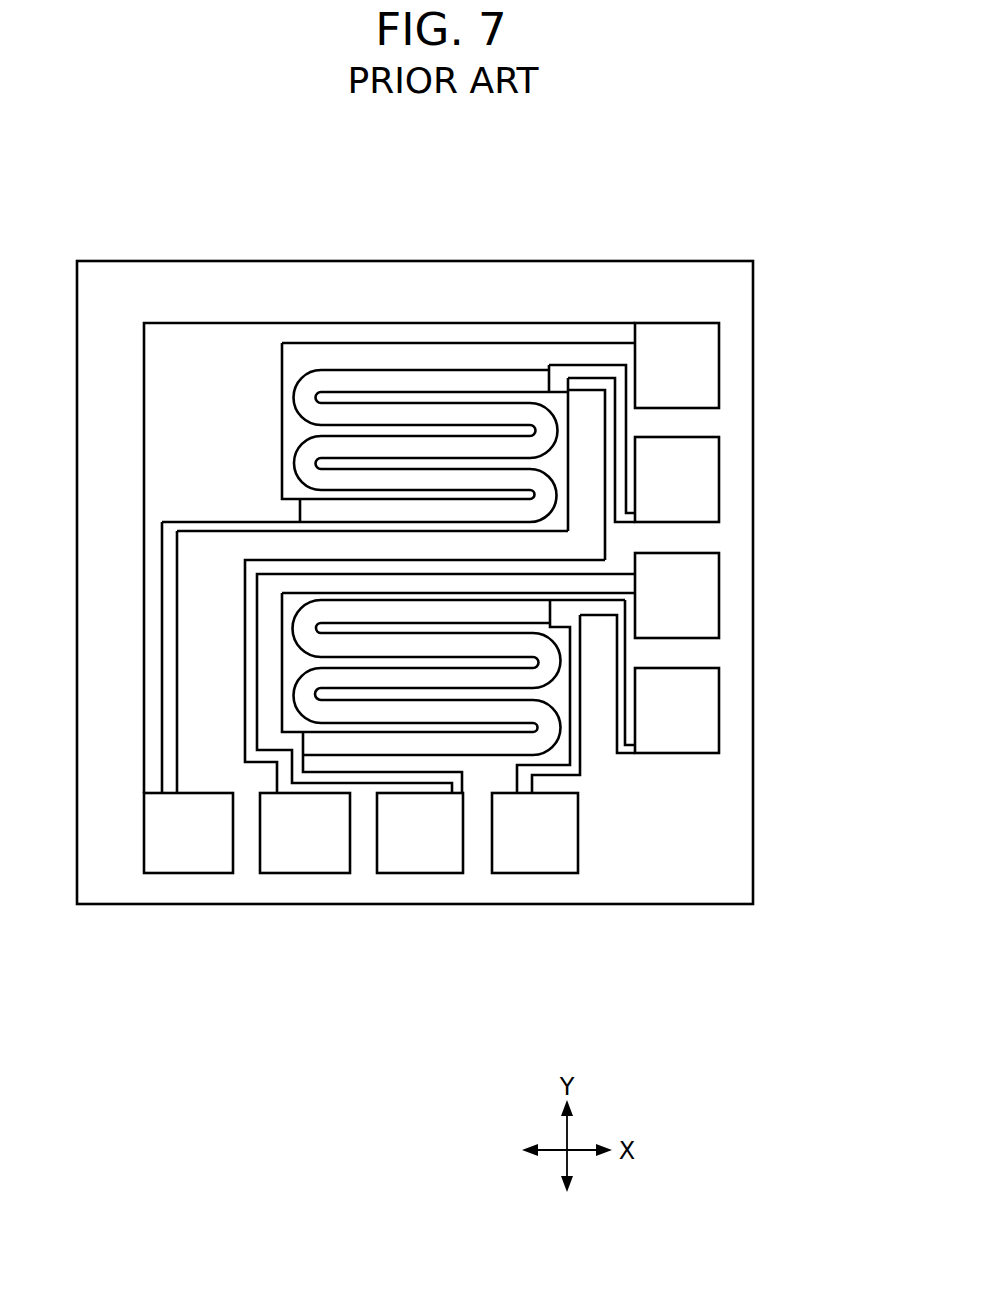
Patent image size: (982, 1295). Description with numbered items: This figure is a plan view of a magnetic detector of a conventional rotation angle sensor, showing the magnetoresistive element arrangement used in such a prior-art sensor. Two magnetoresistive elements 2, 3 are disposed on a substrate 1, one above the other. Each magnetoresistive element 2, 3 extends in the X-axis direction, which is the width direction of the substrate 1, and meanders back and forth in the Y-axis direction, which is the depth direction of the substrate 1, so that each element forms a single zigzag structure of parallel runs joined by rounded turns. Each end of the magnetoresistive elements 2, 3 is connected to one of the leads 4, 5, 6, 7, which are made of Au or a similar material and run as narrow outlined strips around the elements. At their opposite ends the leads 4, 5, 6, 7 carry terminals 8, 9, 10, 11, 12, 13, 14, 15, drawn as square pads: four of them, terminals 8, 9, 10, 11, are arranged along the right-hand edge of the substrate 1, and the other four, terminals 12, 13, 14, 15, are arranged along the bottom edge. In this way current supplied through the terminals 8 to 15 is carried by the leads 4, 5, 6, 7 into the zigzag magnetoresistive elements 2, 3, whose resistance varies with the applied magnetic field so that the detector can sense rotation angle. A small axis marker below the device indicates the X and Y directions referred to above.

The substrate 1 is at (738, 770).
The magnetoresistive element 2 is at (399, 368).
The magnetoresistive element 3 is at (482, 762).
The lead 4 is at (236, 356).
The lead 5 is at (592, 541).
The lead 6 is at (323, 780).
The lead 7 is at (583, 770).
The terminal 8 is at (697, 373).
The terminal 9 is at (698, 480).
The terminal 10 is at (700, 596).
The terminal 11 is at (700, 697).
The terminal 12 is at (538, 853).
The terminal 13 is at (418, 853).
The terminal 14 is at (295, 853).
The terminal 15 is at (192, 853).